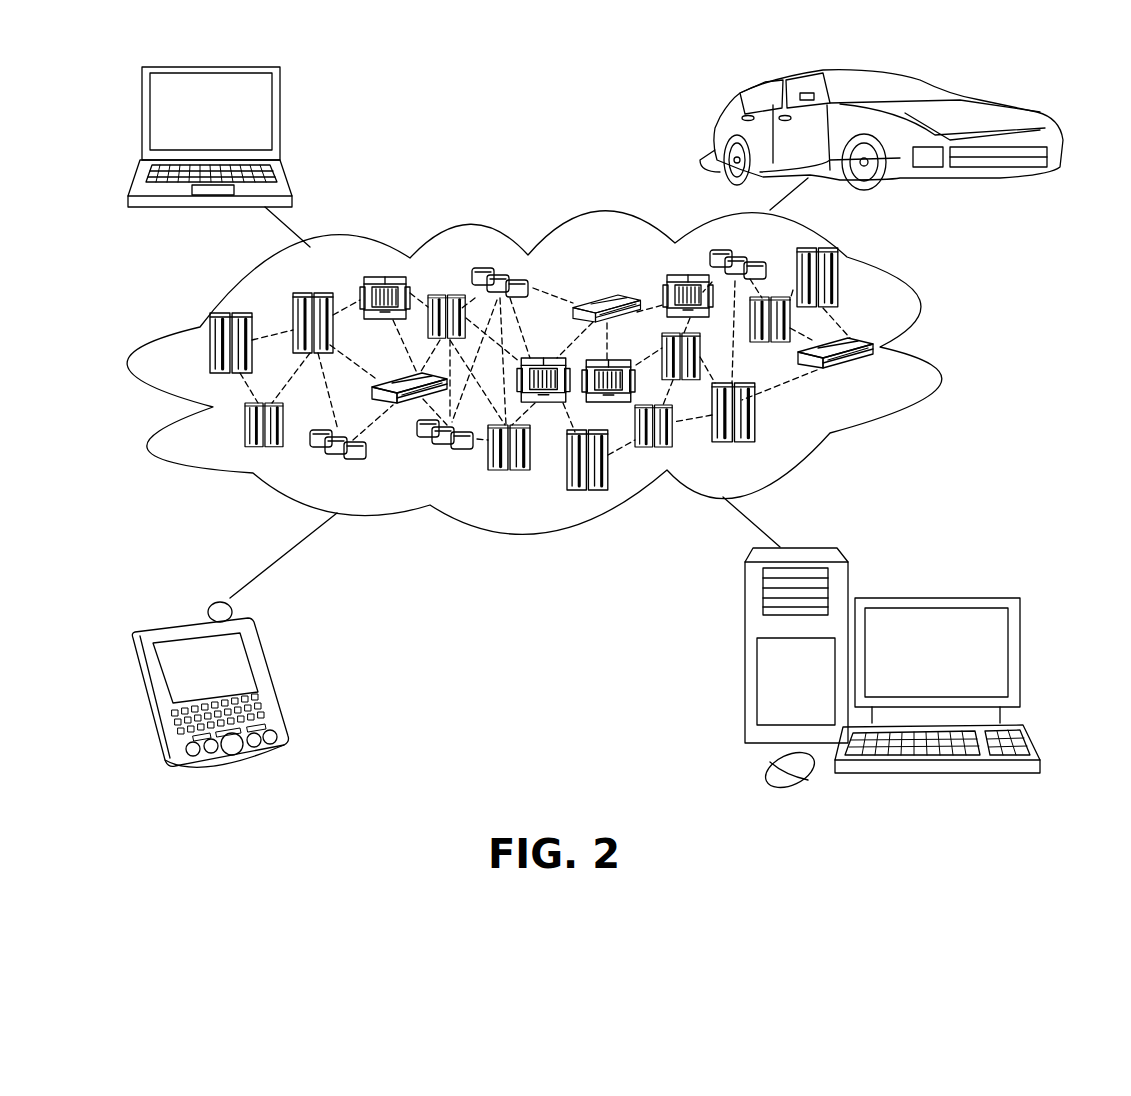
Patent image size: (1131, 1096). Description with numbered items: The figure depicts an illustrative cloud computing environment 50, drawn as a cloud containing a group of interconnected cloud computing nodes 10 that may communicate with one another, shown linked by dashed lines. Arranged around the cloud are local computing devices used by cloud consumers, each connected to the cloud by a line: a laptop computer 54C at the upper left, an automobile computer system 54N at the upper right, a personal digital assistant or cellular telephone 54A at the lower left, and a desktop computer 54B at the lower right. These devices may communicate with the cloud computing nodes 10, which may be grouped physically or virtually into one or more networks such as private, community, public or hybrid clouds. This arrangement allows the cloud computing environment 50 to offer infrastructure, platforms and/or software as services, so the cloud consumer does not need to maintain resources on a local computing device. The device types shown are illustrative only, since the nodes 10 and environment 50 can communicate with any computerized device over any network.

The cloud computing node 10 is at (877, 377).
The cloud computing environment 50 is at (935, 352).
The personal digital assistant (PDA) or cellular telephone 54A is at (274, 681).
The desktop computer 54B is at (947, 578).
The laptop computer 54C is at (282, 118).
The automobile computer system 54N is at (715, 132).